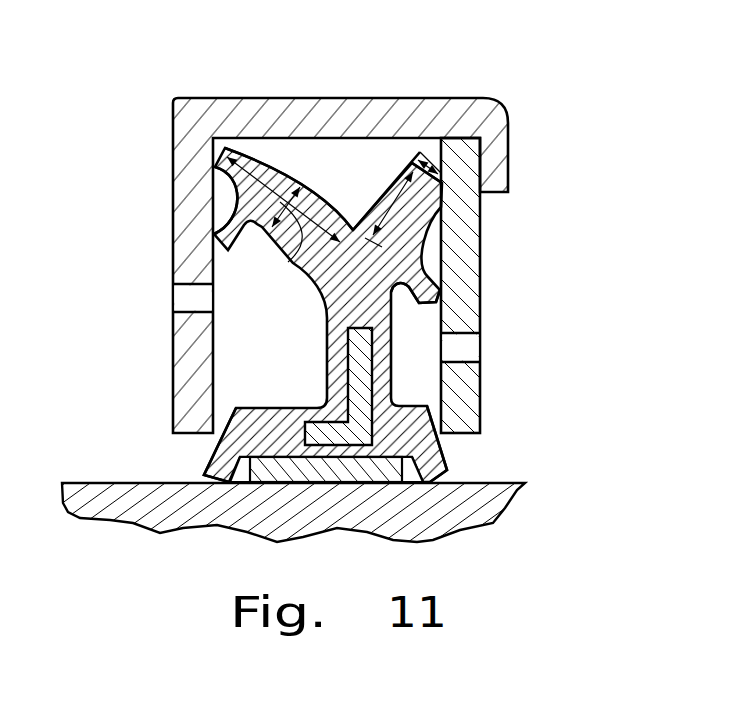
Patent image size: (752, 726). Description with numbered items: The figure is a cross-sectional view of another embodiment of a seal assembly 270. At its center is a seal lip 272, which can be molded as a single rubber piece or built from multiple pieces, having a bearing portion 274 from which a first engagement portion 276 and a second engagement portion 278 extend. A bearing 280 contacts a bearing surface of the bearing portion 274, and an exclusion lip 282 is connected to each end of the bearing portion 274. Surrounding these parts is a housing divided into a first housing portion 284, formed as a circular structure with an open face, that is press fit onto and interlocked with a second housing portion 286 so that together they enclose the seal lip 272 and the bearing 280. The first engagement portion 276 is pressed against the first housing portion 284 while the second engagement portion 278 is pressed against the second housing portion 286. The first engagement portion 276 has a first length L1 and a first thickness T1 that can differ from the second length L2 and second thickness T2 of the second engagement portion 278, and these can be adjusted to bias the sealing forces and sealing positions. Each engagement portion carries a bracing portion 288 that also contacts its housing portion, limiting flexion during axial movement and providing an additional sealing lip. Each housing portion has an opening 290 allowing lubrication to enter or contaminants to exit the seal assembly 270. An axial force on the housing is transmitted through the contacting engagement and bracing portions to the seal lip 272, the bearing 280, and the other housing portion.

The seal assembly 270 is at (336, 232).
The seal lip 272 is at (329, 320).
The bearing portion 274 is at (383, 447).
The first engagement portion 276 is at (283, 272).
The second engagement portion 278 is at (420, 208).
The bearing 280 is at (283, 470).
The exclusion lip 282 is at (213, 470).
The first housing portion 284 is at (185, 165).
The second housing portion 286 is at (470, 267).
The bracing portion 288 is at (213, 232).
The opening 290 is at (185, 302).
The first length L1 is at (312, 207).
The second length L2 is at (392, 210).
The first thickness T1 is at (284, 247).
The second thickness T2 is at (440, 163).